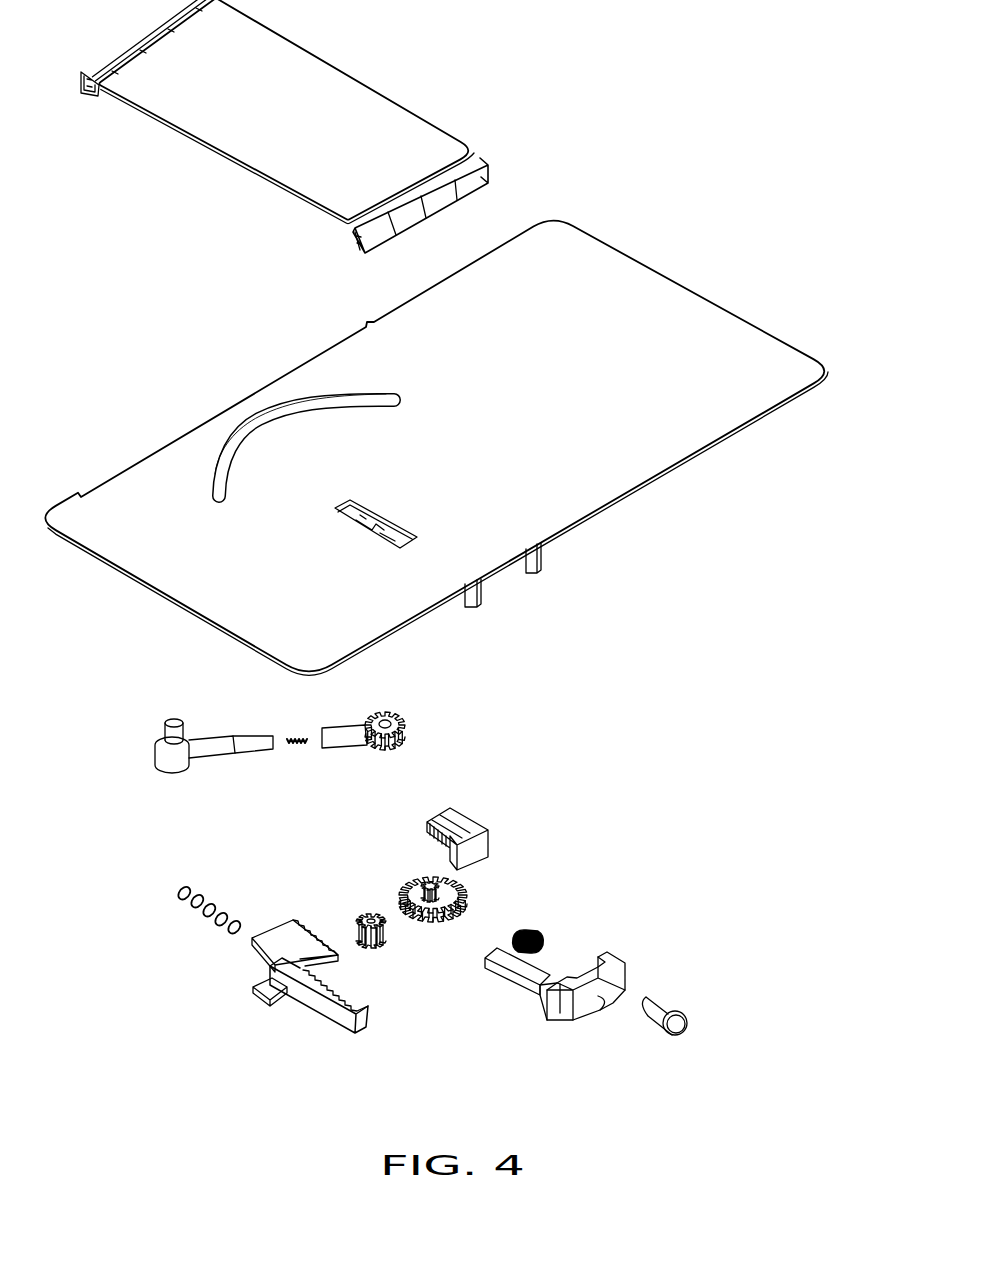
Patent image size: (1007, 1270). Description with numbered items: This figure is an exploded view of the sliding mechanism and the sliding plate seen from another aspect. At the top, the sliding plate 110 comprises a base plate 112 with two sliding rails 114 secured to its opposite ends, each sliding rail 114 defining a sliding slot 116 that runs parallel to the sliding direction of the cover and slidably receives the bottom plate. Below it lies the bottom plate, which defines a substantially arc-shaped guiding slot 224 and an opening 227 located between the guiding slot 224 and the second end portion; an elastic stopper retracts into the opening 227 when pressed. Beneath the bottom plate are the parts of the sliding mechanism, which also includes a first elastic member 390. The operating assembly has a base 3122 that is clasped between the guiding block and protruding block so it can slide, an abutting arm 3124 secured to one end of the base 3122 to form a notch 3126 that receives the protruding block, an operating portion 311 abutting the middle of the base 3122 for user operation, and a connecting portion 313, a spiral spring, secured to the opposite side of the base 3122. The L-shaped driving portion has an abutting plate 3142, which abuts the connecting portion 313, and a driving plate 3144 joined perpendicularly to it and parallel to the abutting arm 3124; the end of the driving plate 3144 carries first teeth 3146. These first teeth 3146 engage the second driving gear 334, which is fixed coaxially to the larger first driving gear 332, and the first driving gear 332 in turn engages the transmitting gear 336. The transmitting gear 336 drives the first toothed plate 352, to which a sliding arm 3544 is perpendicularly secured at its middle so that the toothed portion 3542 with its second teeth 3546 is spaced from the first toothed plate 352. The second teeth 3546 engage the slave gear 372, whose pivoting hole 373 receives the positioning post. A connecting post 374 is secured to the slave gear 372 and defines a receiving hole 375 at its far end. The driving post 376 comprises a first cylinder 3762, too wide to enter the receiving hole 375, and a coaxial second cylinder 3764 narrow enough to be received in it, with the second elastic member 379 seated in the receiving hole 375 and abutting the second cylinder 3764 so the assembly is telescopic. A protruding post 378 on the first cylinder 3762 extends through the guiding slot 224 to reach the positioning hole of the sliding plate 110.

The sliding plate 110 is at (374, 48).
The base plate 112 is at (390, 128).
The sliding rail 114 is at (490, 170).
The sliding slot 116 is at (85, 97).
The guiding slot 224 is at (250, 428).
The opening 227 is at (353, 517).
The operating portion 311 is at (664, 1006).
The connecting portion 313 is at (534, 928).
The base 3122 is at (601, 1009).
The abutting arm 3124 is at (514, 979).
The notch 3126 is at (560, 1030).
The abutting plate 3142 is at (482, 845).
The driving plate 3144 is at (455, 812).
The first teeth 3146 is at (431, 835).
The first driving gear 332 is at (443, 924).
The second driving gear 334 is at (443, 890).
The transmitting gear 336 is at (379, 951).
The first toothed plate 352 is at (322, 1012).
The toothed portion 3542 is at (282, 938).
The sliding arm 3544 is at (255, 992).
The second teeth 3546 is at (316, 937).
The slave gear 372 is at (403, 733).
The pivoting hole 373 is at (386, 716).
The connecting post 374 is at (346, 741).
The receiving hole 375 is at (321, 742).
The driving post 376 is at (154, 775).
The protruding post 378 is at (164, 722).
The first cylinder 3762 is at (203, 752).
The second cylinder 3764 is at (253, 749).
The second elastic member 379 is at (293, 733).
The first elastic member 390 is at (198, 903).